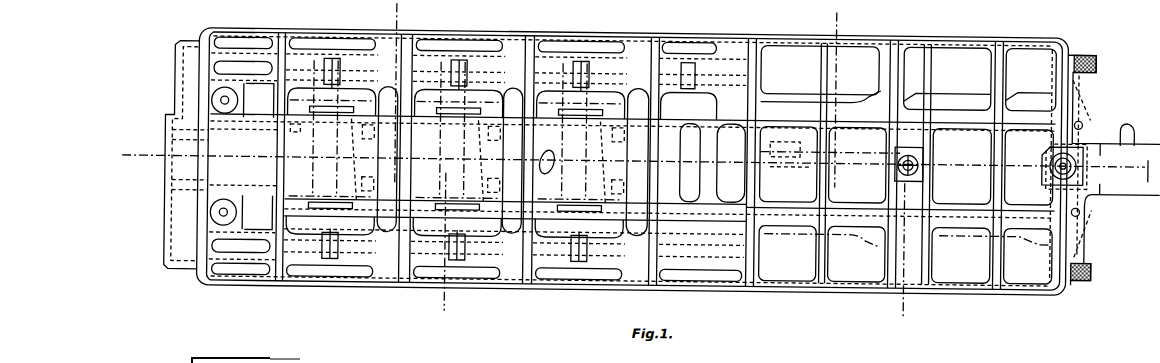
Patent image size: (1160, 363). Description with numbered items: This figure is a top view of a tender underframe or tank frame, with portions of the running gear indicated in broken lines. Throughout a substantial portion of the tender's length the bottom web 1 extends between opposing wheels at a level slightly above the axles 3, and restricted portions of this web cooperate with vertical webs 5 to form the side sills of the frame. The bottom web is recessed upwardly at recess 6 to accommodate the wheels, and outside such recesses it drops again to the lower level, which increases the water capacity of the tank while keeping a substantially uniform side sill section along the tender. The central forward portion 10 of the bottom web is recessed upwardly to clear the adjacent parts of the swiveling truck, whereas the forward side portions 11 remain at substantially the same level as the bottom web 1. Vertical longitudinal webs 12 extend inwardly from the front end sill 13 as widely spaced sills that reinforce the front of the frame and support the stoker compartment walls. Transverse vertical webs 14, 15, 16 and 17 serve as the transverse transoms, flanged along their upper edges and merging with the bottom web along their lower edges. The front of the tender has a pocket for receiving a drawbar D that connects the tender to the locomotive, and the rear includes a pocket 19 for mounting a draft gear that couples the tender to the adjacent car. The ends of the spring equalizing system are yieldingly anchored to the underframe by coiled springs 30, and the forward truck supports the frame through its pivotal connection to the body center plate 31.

The bottom web 1 is at (649, 162).
The axles 3 is at (130, 162).
The vertical webs 5 is at (836, 13).
The recess for wheels 6 is at (396, 16).
The central forward portion of the bottom web 10 is at (961, 167).
The forward side portions of the web 11 is at (908, 165).
The vertical longitudinal webs 12 is at (442, 121).
The front end sill 13 is at (1085, 246).
The transverse vertical web 14 is at (277, 189).
The transverse vertical web 15 is at (413, 139).
The transverse vertical web 16 is at (822, 182).
The transverse vertical web 17 is at (928, 184).
The pocket 19 is at (217, 163).
The coiled springs 30 is at (295, 123).
The body center plate 31 is at (893, 160).
The drawbar D is at (1124, 135).